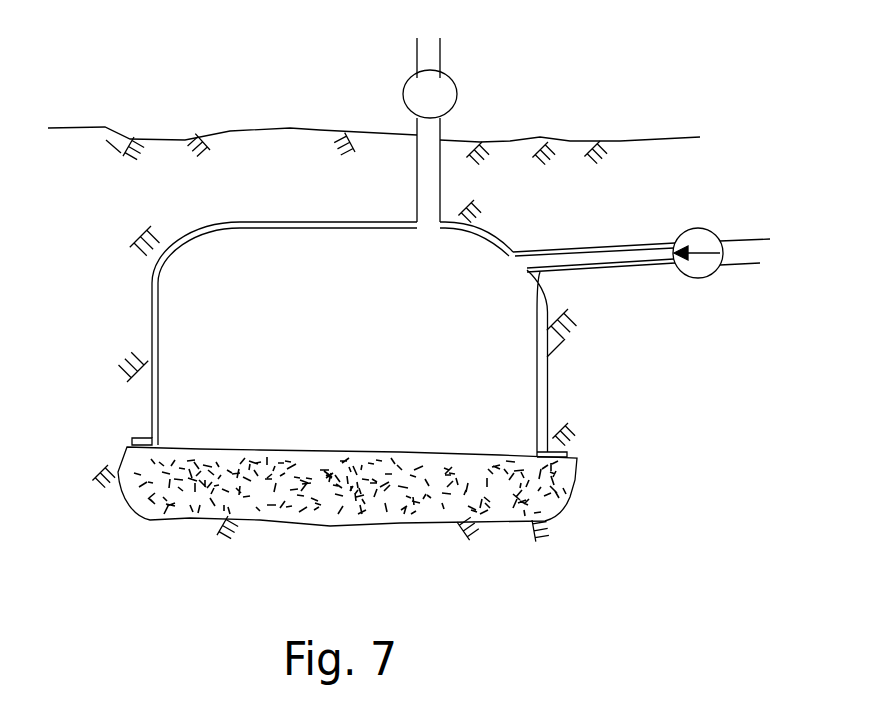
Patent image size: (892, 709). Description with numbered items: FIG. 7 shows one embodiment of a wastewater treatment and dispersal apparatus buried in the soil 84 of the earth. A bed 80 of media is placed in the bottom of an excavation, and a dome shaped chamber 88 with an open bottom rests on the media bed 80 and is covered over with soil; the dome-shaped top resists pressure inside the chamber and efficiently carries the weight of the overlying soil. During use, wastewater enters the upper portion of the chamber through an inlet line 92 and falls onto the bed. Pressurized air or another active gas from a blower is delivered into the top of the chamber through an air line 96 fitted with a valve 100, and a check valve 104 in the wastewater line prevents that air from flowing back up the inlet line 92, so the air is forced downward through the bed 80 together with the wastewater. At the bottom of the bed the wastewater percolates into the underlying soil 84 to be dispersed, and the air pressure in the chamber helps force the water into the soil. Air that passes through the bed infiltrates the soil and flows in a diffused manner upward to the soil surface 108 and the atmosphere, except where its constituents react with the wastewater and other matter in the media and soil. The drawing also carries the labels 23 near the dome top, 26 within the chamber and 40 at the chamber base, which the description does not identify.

The tank top 23 is at (318, 221).
The tank interior 26 is at (407, 328).
The flange/base 40 is at (136, 438).
The bed of media 80 is at (562, 481).
The soil 84 is at (54, 203).
The dome shaped chamber 88 is at (152, 337).
The inlet line 92 is at (578, 249).
The air line 96 is at (442, 127).
The valve 100 is at (456, 88).
The check valve 104 is at (715, 228).
The soil surface 108 is at (230, 130).